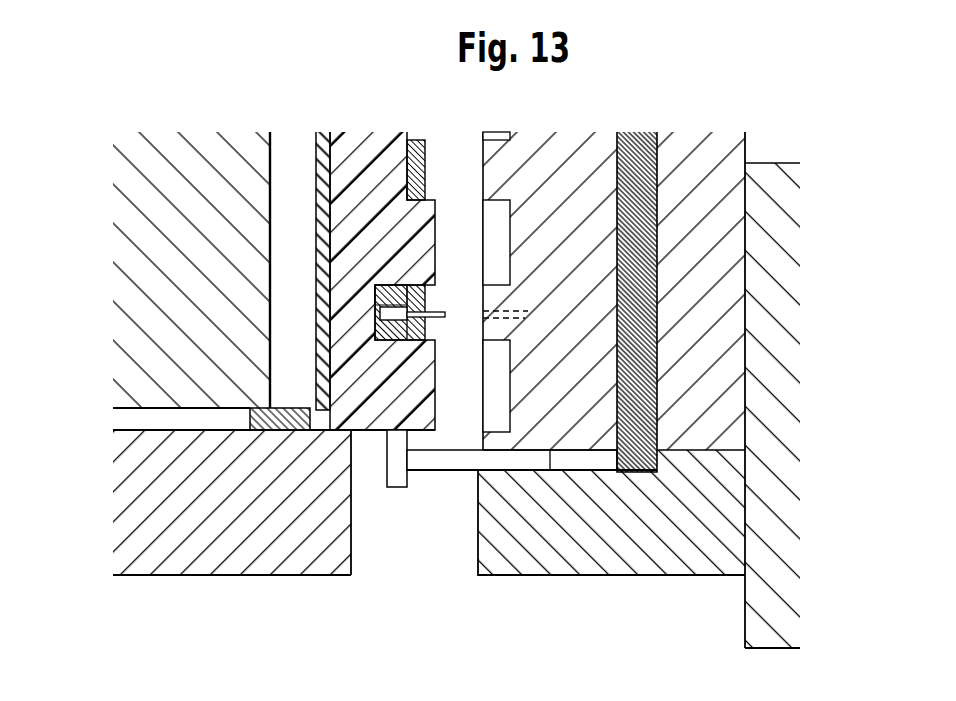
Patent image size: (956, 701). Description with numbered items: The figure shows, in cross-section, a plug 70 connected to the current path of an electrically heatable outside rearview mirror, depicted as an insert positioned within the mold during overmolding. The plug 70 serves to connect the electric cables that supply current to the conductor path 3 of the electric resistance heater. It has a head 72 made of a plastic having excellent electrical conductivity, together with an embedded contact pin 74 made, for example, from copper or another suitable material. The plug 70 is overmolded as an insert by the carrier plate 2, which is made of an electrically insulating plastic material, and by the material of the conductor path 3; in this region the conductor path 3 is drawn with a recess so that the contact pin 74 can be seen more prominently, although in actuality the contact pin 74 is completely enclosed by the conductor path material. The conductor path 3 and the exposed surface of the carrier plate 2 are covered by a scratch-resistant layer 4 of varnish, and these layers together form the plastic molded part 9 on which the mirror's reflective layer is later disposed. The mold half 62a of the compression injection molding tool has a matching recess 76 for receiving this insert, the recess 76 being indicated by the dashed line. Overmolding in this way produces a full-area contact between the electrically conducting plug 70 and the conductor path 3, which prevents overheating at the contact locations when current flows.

The carrier plate 2 is at (381, 144).
The conductor path 3 is at (428, 160).
The scratch-resistant layer 4 is at (316, 148).
The plastic molded part 9 is at (374, 229).
The mold half 62a is at (573, 423).
The plug 70 is at (375, 303).
The head 72 is at (385, 297).
The contact pin 74 is at (440, 311).
The recess 76 is at (498, 314).